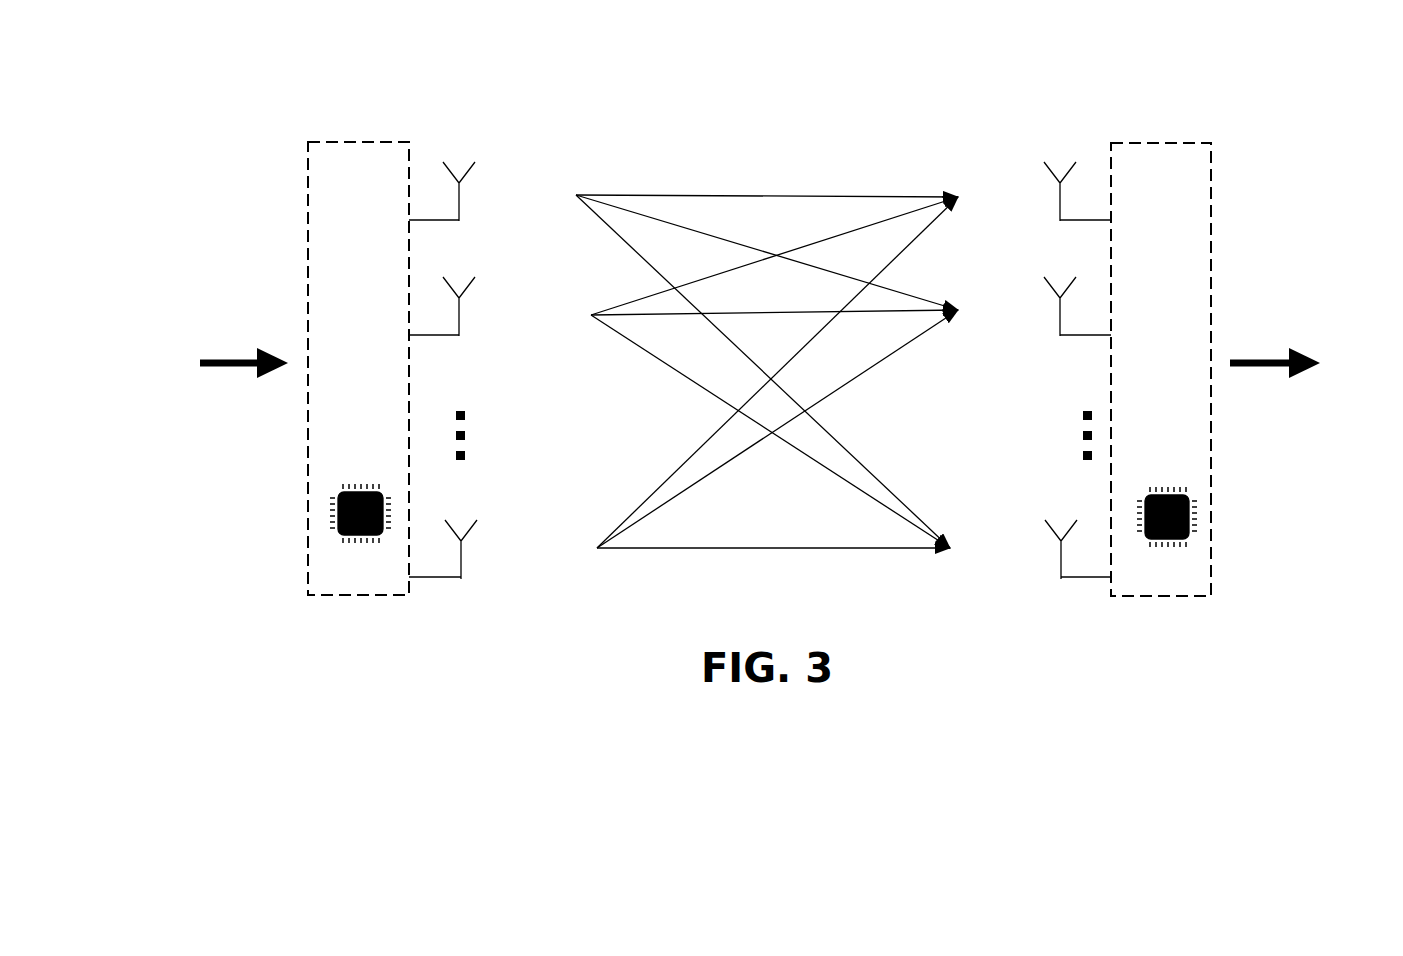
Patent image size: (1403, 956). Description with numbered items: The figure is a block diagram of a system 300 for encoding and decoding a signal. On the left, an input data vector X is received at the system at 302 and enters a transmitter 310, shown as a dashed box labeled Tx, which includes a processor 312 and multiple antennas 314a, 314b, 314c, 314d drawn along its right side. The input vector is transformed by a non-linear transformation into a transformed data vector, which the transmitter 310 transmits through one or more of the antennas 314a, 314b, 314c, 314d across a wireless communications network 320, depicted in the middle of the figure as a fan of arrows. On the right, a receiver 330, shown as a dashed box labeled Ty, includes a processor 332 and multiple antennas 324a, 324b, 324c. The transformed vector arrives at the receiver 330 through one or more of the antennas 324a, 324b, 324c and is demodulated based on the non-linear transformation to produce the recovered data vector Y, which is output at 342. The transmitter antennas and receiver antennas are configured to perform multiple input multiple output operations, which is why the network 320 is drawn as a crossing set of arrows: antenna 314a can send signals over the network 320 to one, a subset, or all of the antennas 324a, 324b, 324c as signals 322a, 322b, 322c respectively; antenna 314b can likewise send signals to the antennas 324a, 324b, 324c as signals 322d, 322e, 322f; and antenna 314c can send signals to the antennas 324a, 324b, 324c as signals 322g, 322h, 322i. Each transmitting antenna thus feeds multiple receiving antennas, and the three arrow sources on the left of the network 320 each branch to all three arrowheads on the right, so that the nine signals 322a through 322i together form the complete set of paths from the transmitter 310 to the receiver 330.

The system 300 is at (229, 86).
The input data vector X 302 is at (220, 382).
The transmitter 310 is at (358, 368).
The processor 312 is at (360, 532).
The antenna 314a is at (452, 174).
The antenna 314b is at (455, 291).
The antenna 314c is at (465, 420).
The antenna 314d is at (448, 535).
The wireless communications network 320 is at (767, 348).
The signal 322a is at (767, 183).
The signal 322b is at (767, 252).
The signal 322c is at (763, 371).
The signal 322d is at (773, 256).
The signal 322e is at (774, 302).
The signal 322f is at (770, 431).
The signal 322g is at (777, 372).
The signal 322h is at (777, 429).
The signal 322i is at (773, 538).
The antenna 324a is at (1073, 175).
The antenna 324b is at (1073, 291).
The antenna 324c is at (1073, 535).
The receiver 330 is at (1161, 369).
The processor 332 is at (1167, 536).
The recovered data vector Y 342 is at (1290, 378).